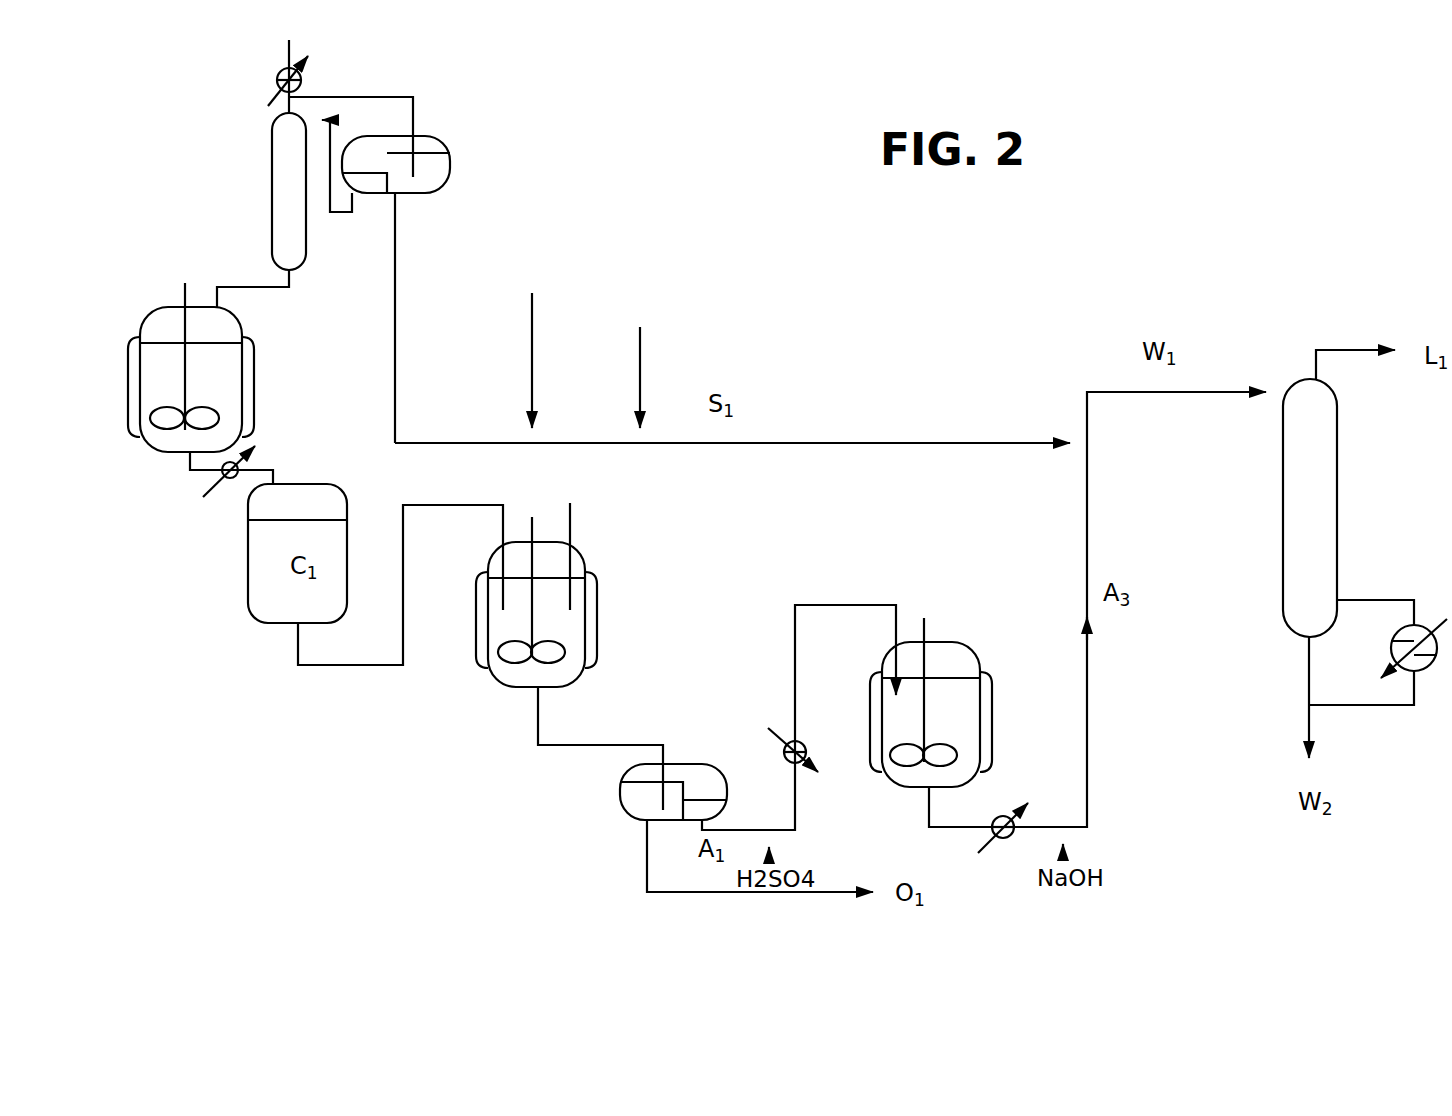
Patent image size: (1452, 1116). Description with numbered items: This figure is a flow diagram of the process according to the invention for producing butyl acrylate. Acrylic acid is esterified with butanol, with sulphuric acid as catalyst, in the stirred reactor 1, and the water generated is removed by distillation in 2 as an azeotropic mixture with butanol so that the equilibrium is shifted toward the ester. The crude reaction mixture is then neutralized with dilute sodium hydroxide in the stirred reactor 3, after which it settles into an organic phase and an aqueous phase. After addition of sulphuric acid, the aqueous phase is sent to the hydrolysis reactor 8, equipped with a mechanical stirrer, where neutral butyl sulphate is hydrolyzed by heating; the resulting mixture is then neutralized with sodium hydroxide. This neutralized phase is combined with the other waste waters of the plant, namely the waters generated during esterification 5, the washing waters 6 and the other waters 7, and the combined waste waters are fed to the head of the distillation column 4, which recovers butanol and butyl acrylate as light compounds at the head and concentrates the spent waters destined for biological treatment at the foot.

The stirred reactor 1 is at (168, 397).
The distillation 2 is at (289, 183).
The stirred reactor 3 is at (573, 630).
The distillation column 4 is at (1312, 498).
The waters generated during the esterification reaction 5 is at (395, 351).
The washing waters 6 is at (532, 362).
The other waters of the plant 7 is at (640, 350).
The hydrolysis reactor 8 is at (967, 732).